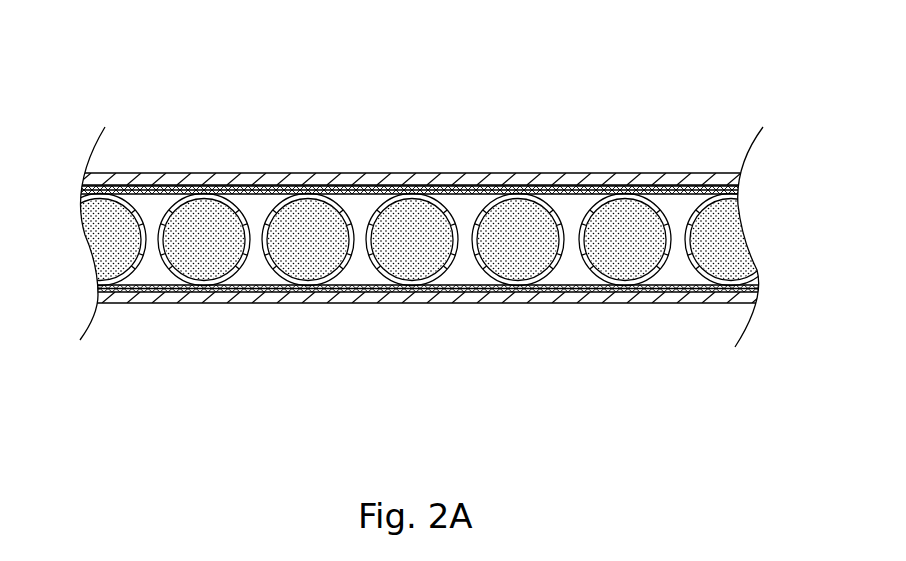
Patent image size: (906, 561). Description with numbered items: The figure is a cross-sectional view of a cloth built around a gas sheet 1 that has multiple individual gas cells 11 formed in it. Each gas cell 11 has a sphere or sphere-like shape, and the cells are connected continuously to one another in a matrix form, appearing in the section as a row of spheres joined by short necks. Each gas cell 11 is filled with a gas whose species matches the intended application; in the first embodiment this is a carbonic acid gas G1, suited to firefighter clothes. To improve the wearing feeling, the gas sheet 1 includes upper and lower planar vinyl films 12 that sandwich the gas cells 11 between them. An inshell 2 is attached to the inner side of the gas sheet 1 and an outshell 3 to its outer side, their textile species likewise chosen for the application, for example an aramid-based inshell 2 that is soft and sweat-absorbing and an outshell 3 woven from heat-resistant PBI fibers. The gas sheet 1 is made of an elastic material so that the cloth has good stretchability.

The gas sheet 1 is at (438, 188).
The inshell 2 is at (345, 298).
The outshell 3 is at (215, 175).
The gas cell 11 is at (283, 285).
The planar vinyl film 12 is at (345, 185).
The carbonic acid gas G1 is at (605, 253).